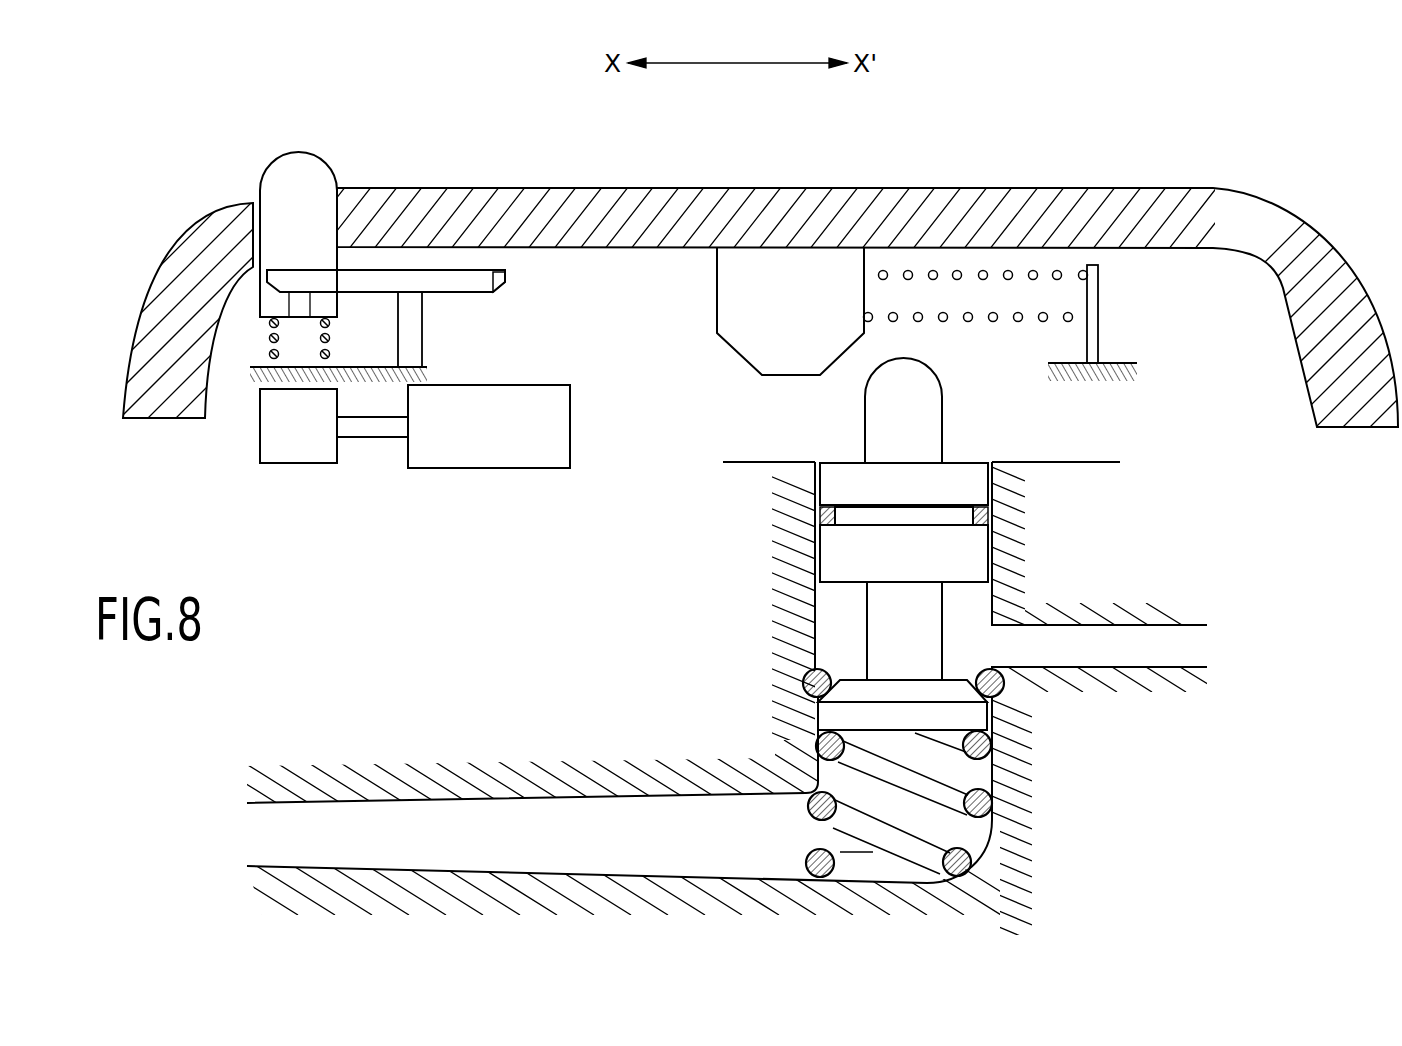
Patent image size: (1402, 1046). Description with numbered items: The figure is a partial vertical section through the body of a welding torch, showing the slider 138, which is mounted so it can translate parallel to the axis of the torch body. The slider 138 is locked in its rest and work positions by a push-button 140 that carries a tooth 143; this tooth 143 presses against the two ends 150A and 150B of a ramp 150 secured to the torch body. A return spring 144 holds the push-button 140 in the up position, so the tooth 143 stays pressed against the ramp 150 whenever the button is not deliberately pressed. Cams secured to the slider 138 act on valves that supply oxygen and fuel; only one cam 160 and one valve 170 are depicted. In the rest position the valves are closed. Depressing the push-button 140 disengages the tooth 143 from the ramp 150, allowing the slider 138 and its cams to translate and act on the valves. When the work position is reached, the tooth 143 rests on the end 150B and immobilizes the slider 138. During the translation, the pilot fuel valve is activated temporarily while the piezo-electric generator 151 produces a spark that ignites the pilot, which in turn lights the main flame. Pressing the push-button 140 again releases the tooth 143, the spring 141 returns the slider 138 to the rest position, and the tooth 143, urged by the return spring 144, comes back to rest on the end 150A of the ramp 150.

The slider 138 is at (845, 202).
The push-button 140 is at (295, 167).
The spring 141 is at (1018, 323).
The tooth 143 is at (290, 300).
The return spring 144 is at (331, 326).
The ramp 150 is at (405, 284).
The end of the ramp 150A is at (278, 277).
The end of the ramp 150B is at (506, 285).
The piezo-electric generator 151 is at (557, 460).
The cam 160 is at (772, 345).
The valve 170 is at (888, 482).